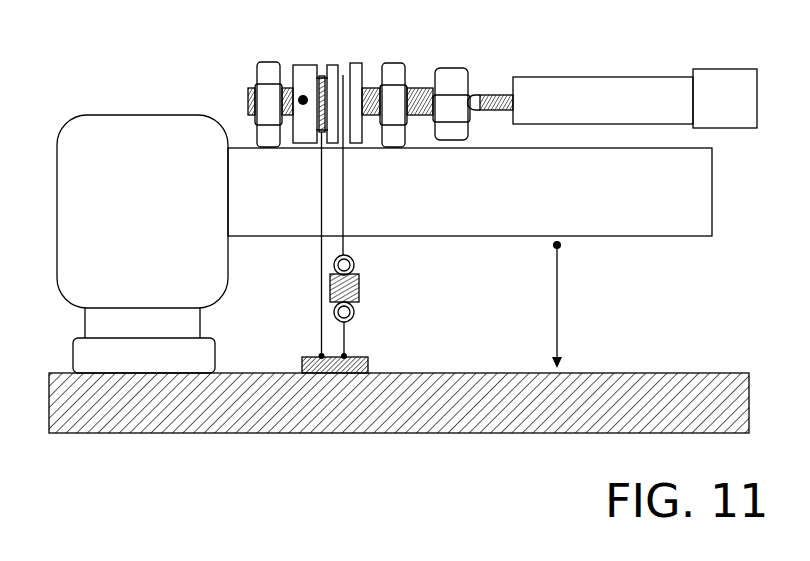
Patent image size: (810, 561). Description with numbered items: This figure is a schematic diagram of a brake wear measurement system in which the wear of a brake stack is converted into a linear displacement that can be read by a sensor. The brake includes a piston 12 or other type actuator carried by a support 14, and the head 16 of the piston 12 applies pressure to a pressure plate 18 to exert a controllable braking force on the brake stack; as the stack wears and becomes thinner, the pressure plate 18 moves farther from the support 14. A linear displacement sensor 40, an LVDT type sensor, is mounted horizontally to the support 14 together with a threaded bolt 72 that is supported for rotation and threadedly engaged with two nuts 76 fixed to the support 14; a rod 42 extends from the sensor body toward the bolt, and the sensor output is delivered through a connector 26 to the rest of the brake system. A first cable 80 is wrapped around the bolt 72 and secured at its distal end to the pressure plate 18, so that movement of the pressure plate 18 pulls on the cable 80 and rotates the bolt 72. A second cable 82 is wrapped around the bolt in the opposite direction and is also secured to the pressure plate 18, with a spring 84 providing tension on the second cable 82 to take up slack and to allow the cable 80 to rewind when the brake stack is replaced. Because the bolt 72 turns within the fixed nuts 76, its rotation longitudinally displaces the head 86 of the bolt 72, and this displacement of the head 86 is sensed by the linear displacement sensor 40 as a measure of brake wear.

The piston 12 is at (157, 232).
The support 14 is at (687, 187).
The head 16 is at (87, 362).
The pressure plate 18 is at (117, 408).
The connector 26 is at (720, 88).
The linear displacement sensor 40 is at (608, 95).
The actuator rod 42 is at (495, 90).
The threaded bolt 72 is at (418, 85).
The nuts 76 is at (270, 70).
The first cable 80 is at (320, 250).
The second cable 82 is at (342, 218).
The spring 84 is at (360, 288).
The head 86 is at (460, 72).